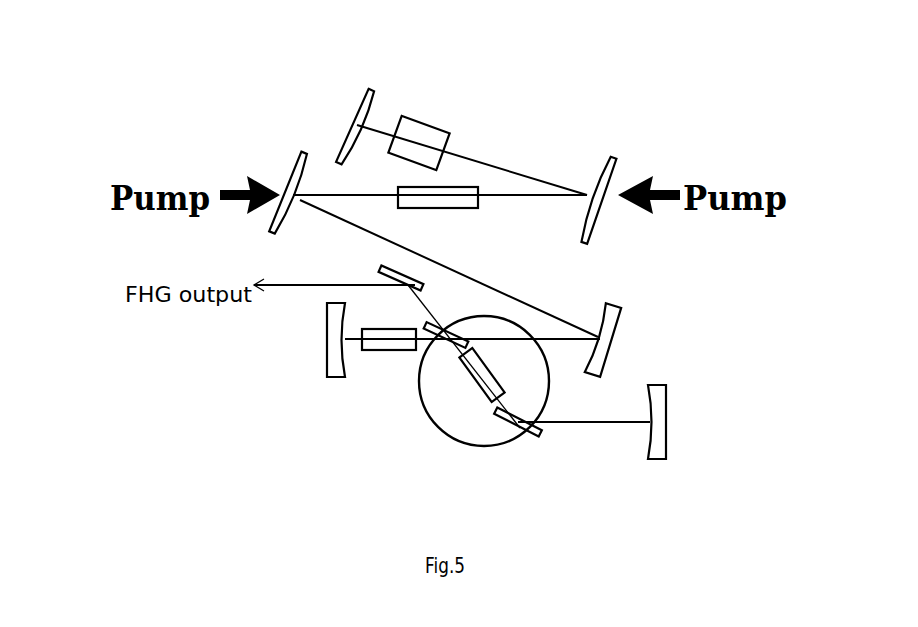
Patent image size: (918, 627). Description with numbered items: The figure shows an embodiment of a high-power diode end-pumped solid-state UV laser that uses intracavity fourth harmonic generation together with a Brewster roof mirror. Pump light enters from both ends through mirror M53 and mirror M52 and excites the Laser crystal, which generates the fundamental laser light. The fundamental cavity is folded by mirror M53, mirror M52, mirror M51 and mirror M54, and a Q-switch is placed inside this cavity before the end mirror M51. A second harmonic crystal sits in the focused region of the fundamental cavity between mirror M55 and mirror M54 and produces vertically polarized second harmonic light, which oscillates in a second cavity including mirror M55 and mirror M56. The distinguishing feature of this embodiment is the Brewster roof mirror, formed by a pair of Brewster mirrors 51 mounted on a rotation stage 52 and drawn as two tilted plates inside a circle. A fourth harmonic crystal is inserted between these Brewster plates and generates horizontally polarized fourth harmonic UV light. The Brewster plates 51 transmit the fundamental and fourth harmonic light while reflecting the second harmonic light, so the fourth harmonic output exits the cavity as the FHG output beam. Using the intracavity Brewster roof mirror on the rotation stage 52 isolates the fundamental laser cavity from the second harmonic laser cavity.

The mirror M51 is at (364, 115).
The mirror M52 is at (606, 181).
The mirror M53 is at (284, 181).
The mirror M54 is at (627, 333).
The mirror M55 is at (301, 340).
The mirror M56 is at (690, 422).
The element Q-switch is at (445, 120).
The laser crystal Laser crystal is at (468, 172).
The pair of Brewster mirrors 51 is at (488, 423).
The rotation stage 52 is at (436, 432).